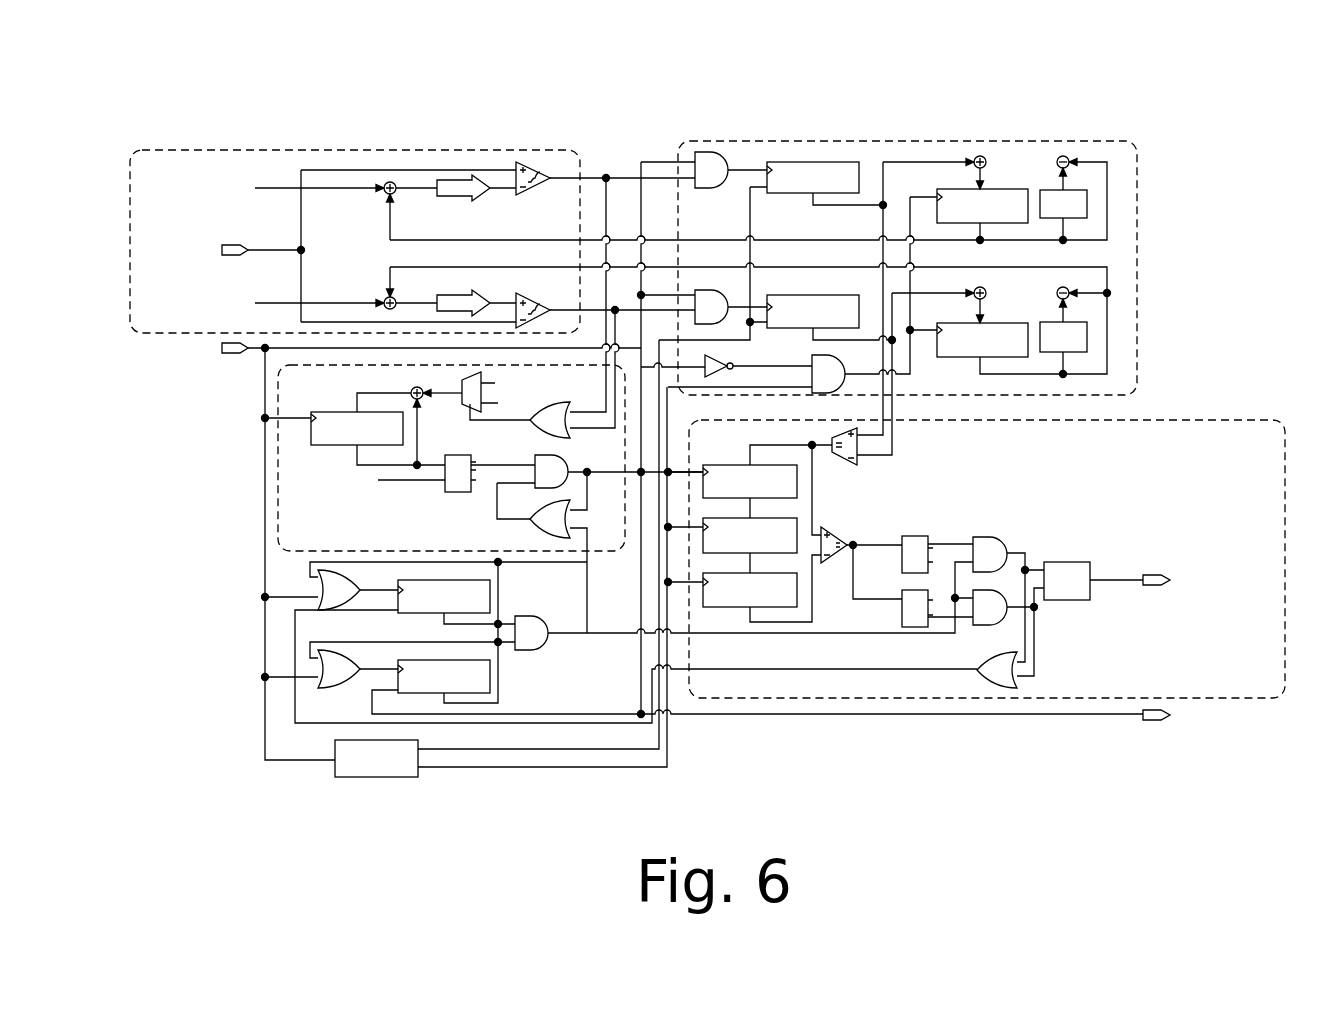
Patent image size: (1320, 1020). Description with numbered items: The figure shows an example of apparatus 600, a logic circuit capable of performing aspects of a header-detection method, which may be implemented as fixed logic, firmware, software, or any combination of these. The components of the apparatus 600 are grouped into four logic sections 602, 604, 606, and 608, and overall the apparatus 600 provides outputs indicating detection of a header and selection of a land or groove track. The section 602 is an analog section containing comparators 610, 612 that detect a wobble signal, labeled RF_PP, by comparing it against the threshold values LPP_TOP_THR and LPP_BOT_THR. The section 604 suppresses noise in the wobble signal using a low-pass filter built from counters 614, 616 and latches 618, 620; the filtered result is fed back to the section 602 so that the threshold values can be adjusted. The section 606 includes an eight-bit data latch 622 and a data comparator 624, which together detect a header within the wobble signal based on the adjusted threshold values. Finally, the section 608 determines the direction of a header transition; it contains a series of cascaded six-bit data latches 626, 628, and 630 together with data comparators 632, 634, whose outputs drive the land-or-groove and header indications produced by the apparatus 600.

The apparatus 600 is at (277, 96).
The logic section 602 is at (490, 148).
The logic section 604 is at (918, 141).
The logic section 606 is at (278, 503).
The logic section 608 is at (1185, 420).
The comparator 610 is at (520, 196).
The comparator 612 is at (522, 298).
The counter 614 is at (827, 296).
The counter 616 is at (812, 194).
The latch 618 is at (995, 189).
The latch 620 is at (995, 323).
The 8-bit data latch 622 is at (345, 412).
The data comparator 624 is at (462, 456).
The 6-bit data latch 626 is at (745, 465).
The 6-bit data latch 628 is at (745, 518).
The 6-bit data latch 630 is at (745, 573).
The data comparator 632 is at (914, 573).
The data comparator 634 is at (914, 627).